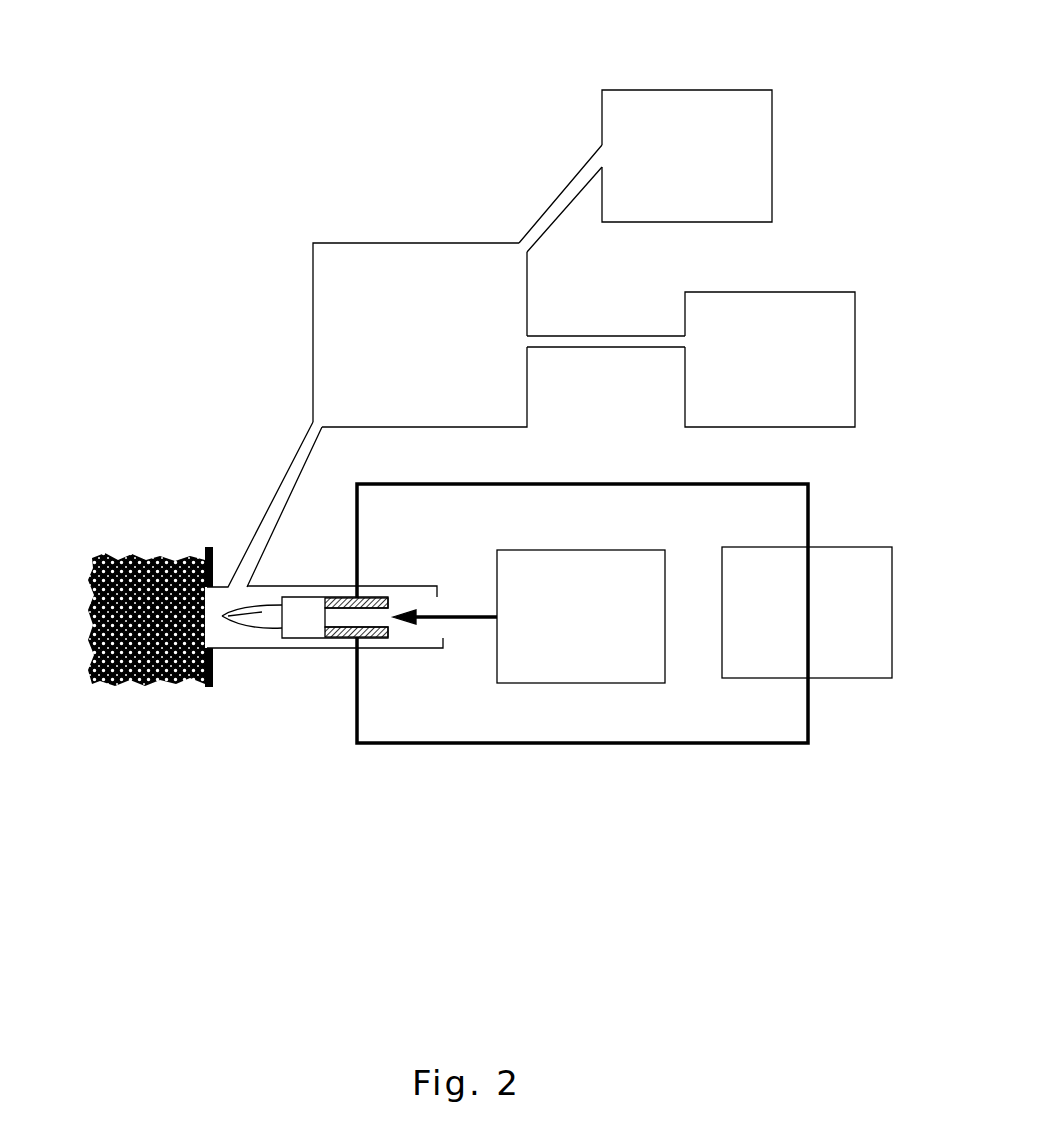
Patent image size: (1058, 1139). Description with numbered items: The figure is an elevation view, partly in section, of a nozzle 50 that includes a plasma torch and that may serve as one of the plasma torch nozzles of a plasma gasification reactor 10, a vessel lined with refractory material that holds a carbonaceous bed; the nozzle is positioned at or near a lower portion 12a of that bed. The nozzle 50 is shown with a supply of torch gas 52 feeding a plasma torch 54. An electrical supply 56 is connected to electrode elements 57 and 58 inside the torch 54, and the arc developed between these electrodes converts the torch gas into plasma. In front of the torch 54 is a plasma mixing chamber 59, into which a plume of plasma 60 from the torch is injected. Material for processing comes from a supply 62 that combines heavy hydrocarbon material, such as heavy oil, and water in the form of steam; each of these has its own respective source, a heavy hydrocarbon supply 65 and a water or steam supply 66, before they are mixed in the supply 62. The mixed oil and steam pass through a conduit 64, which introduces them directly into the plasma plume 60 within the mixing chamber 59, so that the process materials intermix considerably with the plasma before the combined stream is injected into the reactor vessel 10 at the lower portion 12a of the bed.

The plasma gasification reactor 10 is at (156, 592).
The lower portion of the bed 12a is at (131, 639).
The nozzle 50 is at (352, 697).
The supply of torch gas 52 is at (582, 613).
The plasma torch 54 is at (335, 575).
The electrical supply 56 is at (832, 650).
The electrode element 57 is at (395, 560).
The electrode element 58 is at (389, 675).
The plasma mixing chamber 59 is at (200, 716).
The plume of plasma 60 is at (285, 731).
The supply of material for processing 62 is at (420, 284).
The conduit 64 is at (236, 475).
The heavy hydrocarbon supply 65 is at (684, 127).
The water supply 66 is at (724, 315).